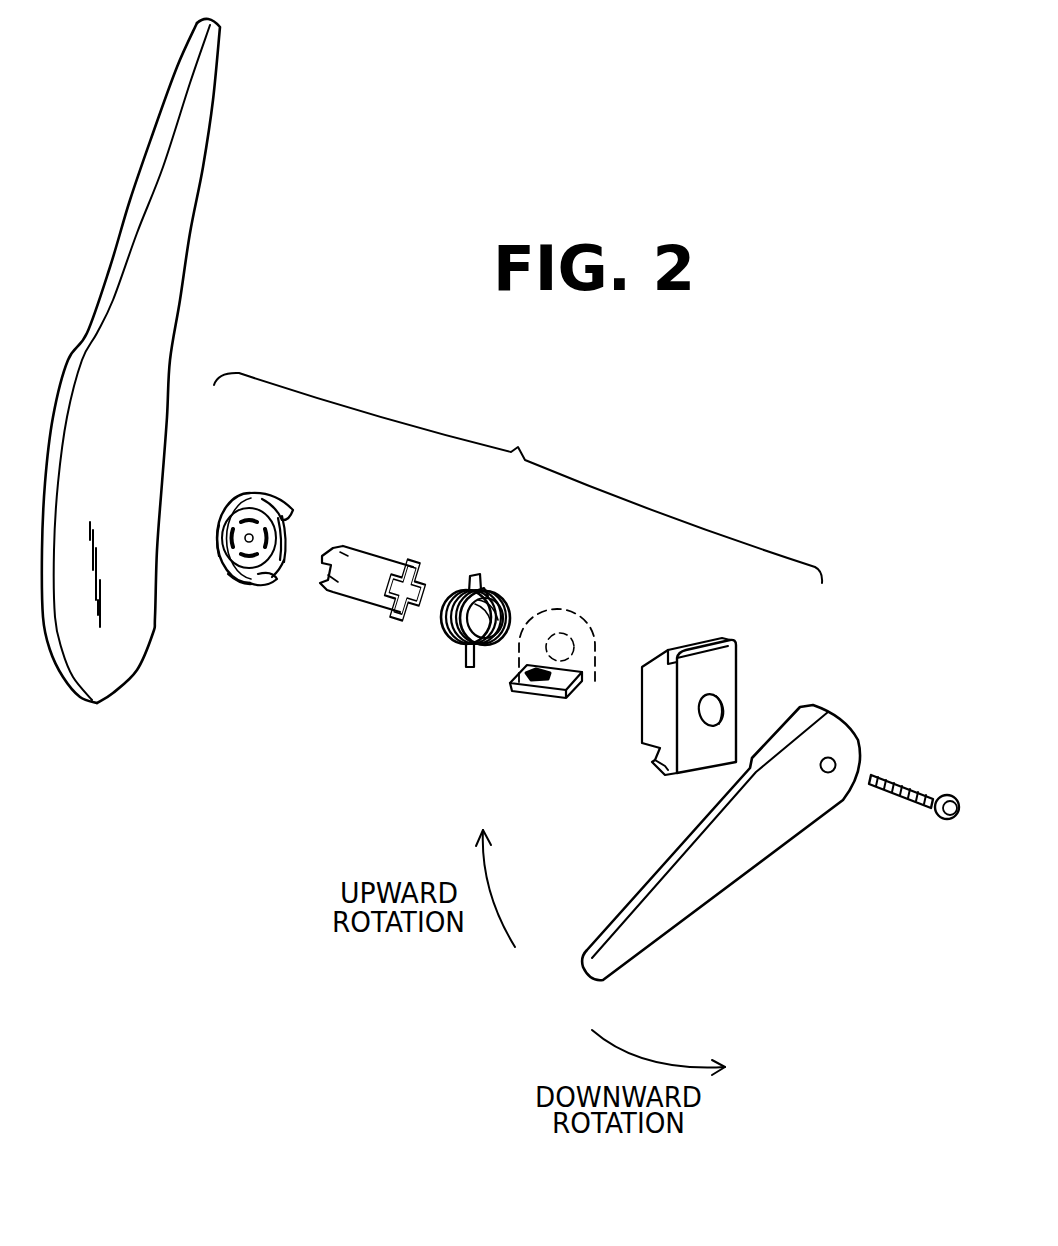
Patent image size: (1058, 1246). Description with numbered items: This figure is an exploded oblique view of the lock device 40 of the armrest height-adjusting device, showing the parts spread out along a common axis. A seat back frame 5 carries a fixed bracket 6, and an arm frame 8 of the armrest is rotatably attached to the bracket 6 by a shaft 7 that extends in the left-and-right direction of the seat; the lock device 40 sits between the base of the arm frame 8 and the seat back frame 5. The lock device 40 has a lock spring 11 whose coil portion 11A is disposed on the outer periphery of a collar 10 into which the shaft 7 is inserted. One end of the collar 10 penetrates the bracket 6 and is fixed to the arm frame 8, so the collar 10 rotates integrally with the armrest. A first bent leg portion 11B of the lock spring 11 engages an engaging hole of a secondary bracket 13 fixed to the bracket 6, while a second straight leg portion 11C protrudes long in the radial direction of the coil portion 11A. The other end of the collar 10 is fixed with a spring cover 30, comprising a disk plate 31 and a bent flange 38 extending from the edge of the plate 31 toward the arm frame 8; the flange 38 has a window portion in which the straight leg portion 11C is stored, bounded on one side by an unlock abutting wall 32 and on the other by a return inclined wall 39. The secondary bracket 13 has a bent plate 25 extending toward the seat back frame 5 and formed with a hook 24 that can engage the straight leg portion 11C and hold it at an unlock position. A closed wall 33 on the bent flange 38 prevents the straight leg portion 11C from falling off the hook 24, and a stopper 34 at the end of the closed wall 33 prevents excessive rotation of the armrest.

The seat back frame 5 is at (179, 265).
The bracket 6 is at (718, 663).
The shaft 7 is at (915, 785).
The arm frame 8 is at (757, 850).
The collar 10 is at (378, 546).
The lock spring 11 is at (463, 628).
The coil portion 11A is at (466, 590).
The first bent leg portion 11B is at (485, 575).
The second straight leg portion 11C is at (443, 636).
The secondary bracket 13 is at (582, 620).
The hook 24 is at (538, 718).
The bent plate 25 is at (553, 678).
The spring cover 30 is at (272, 543).
The disk plate 31 is at (215, 537).
The unlock abutting wall 32 is at (277, 560).
The closed wall 33 is at (289, 533).
The stopper 34 is at (300, 517).
The bent flange 38 is at (261, 588).
The return inclined wall 39 is at (247, 587).
The lock device 40 is at (518, 478).